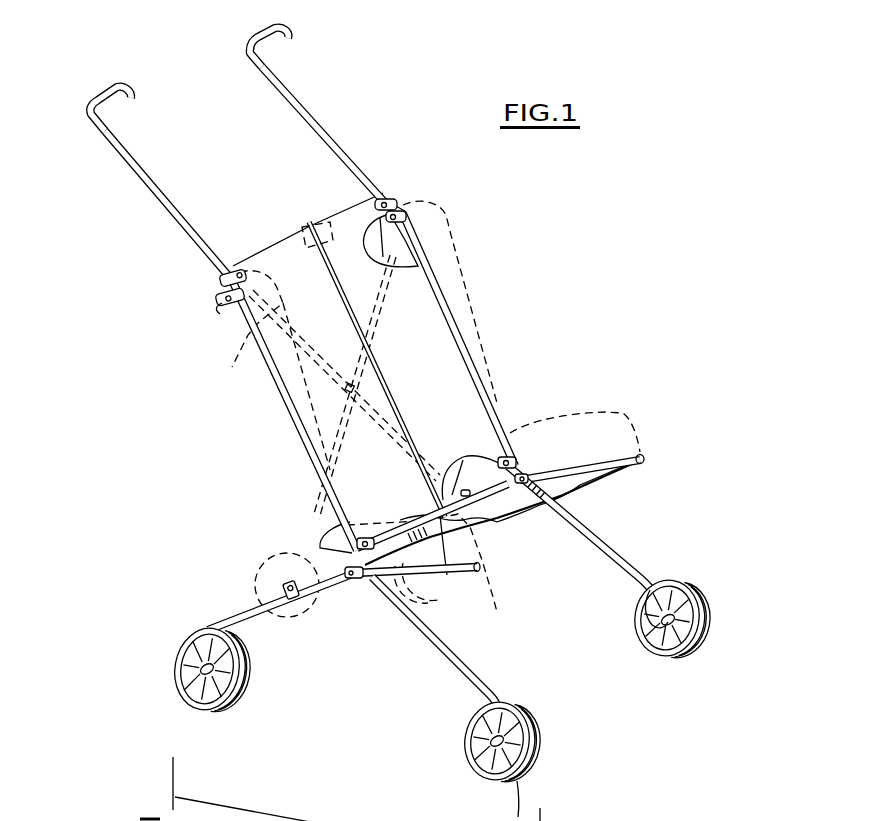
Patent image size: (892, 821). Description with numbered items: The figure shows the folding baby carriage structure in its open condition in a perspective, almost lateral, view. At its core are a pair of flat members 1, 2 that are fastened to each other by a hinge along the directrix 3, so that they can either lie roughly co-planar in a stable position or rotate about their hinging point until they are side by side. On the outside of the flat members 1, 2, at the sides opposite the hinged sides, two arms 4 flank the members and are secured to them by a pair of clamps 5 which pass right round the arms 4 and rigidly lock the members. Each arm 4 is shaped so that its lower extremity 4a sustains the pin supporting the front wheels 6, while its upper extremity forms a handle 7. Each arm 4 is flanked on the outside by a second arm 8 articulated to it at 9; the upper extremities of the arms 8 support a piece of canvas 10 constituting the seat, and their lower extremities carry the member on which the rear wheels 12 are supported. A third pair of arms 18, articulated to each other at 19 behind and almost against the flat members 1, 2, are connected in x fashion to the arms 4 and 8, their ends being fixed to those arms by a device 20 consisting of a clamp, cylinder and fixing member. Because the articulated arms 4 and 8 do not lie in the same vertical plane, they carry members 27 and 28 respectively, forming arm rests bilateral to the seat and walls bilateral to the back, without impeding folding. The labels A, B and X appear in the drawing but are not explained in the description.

The flat member 1 is at (263, 253).
The flat member 2 is at (345, 213).
The directrix 3 is at (309, 222).
The arm 4 is at (113, 153).
The lower extremity of arm 4a is at (667, 610).
The clamp 5 is at (393, 202).
The front wheel 6 is at (684, 660).
The handle 7 is at (90, 103).
The second arm 8 is at (235, 613).
The articulation 9 is at (350, 578).
The piece of canvas 10 is at (540, 527).
The rear wheel 12 is at (203, 707).
The third pair of arms 18 is at (308, 395).
The articulation of arms 18 19 is at (354, 388).
The fixing device 20 is at (224, 316).
The arm rest 27 is at (623, 413).
The wall 28 is at (455, 232).
The direction A is at (388, 612).
The region B is at (262, 553).
The axis X is at (261, 789).